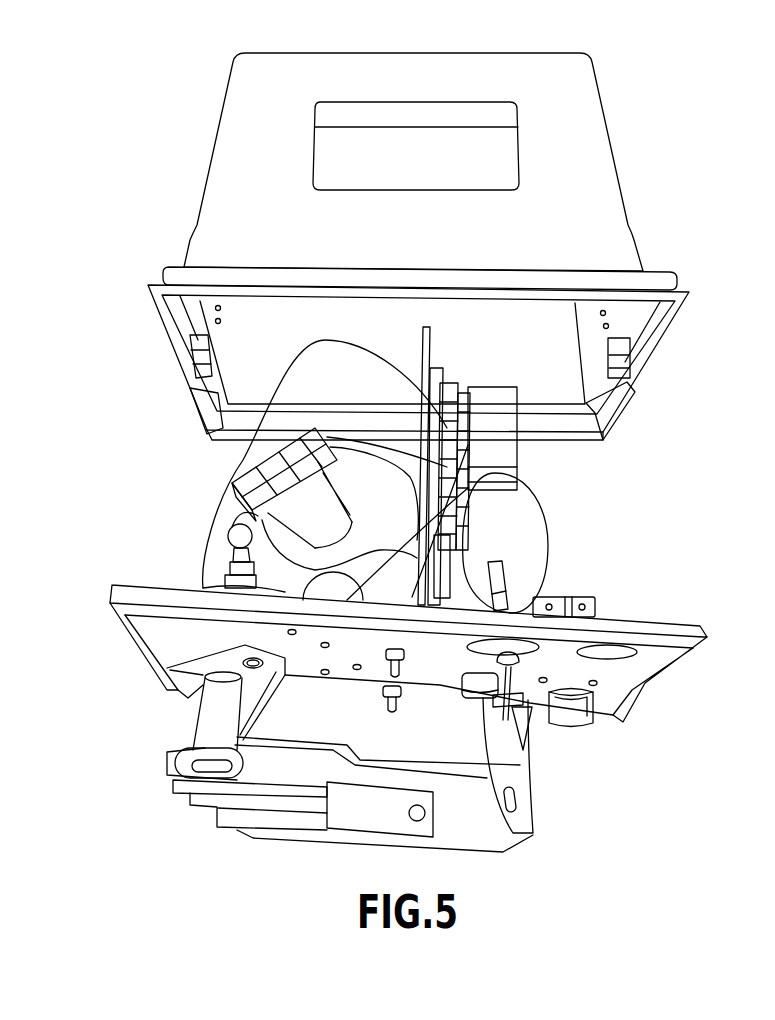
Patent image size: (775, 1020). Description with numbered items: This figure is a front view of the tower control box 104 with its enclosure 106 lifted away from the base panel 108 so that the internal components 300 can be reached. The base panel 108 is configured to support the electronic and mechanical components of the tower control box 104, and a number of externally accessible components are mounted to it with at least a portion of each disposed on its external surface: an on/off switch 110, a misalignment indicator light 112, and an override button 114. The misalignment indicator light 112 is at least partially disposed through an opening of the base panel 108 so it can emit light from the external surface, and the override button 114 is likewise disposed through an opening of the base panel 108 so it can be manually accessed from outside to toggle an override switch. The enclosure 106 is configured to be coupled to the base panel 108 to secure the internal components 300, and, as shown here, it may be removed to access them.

The tower control box 104 is at (370, 226).
The enclosure 106 is at (557, 67).
The base panel 108 is at (150, 630).
The on/off switch 110 is at (573, 713).
The misalignment indicator light 112 is at (513, 750).
The override button 114 is at (507, 832).
The internal components 300 is at (372, 603).